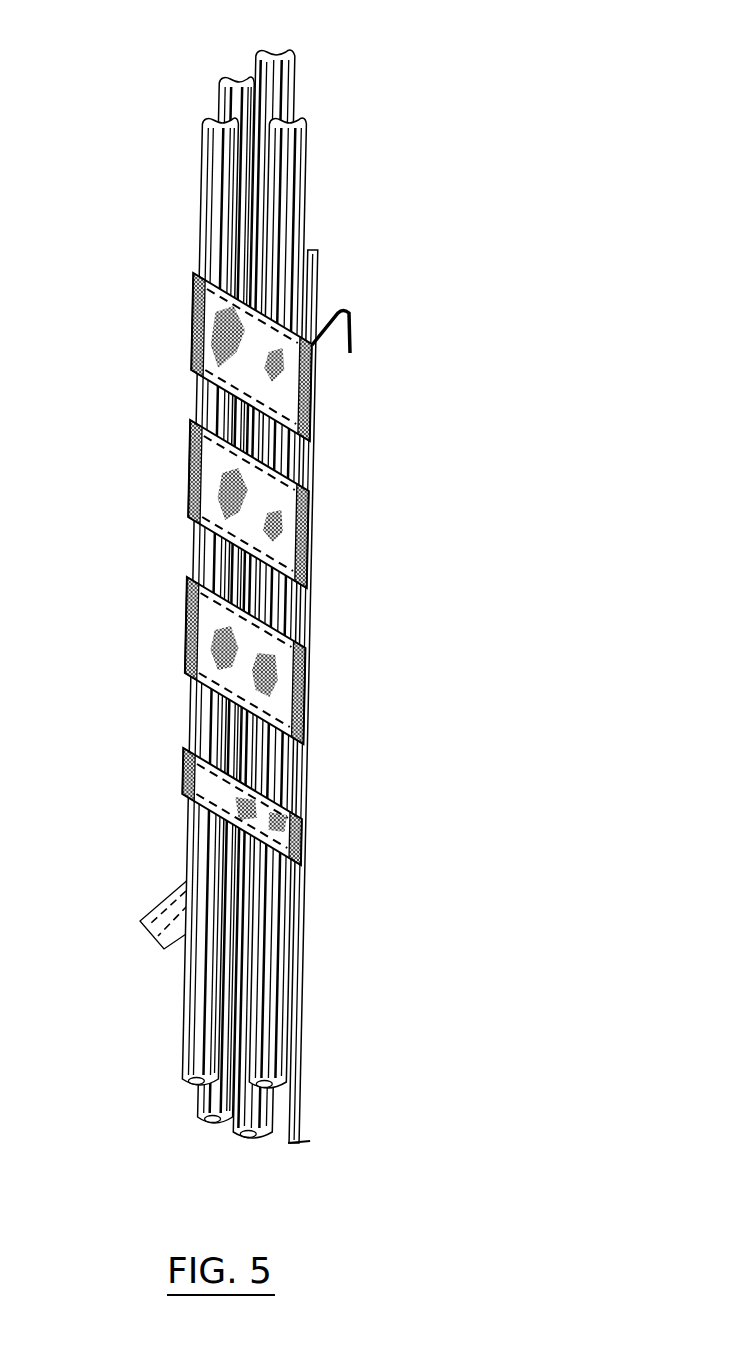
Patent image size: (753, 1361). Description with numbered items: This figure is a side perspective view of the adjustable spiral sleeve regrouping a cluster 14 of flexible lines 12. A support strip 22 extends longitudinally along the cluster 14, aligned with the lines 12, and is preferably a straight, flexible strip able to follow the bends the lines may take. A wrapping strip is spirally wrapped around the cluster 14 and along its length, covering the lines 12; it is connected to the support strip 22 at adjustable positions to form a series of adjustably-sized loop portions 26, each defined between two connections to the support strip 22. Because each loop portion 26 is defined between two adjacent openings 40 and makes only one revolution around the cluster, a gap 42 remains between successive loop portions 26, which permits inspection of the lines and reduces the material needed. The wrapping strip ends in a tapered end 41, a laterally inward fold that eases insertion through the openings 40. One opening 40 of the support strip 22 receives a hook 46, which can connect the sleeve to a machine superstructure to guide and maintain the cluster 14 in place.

The line 12 is at (207, 130).
The cluster of lines 14 is at (281, 36).
The support strip 22 is at (320, 243).
The loop portion 26 is at (310, 535).
The opening 40 is at (302, 748).
The tapered end 41 is at (150, 889).
The gap 42 is at (172, 387).
The hook 46 is at (362, 330).